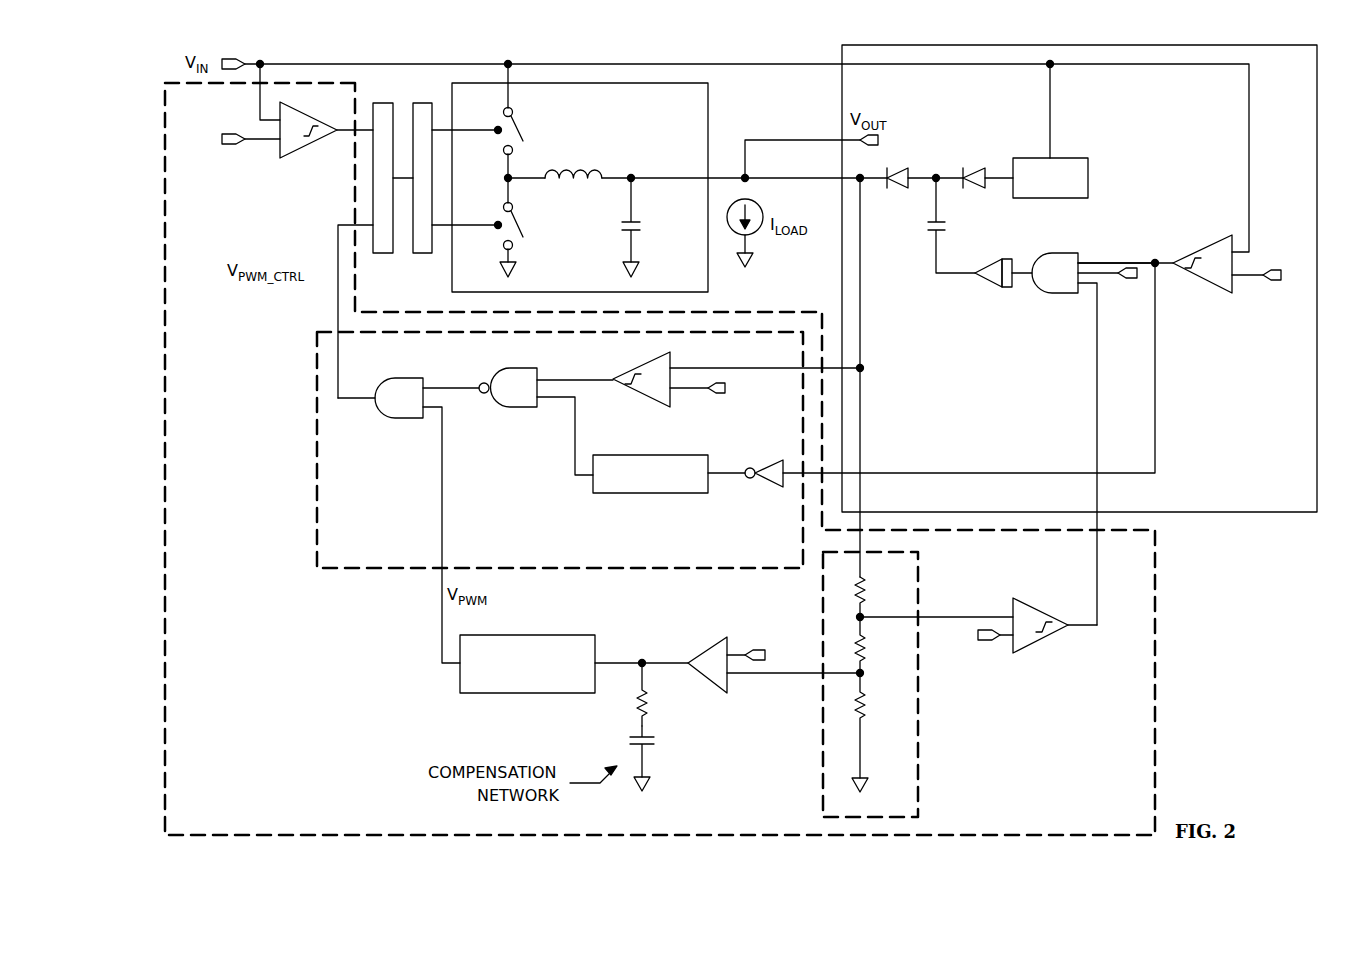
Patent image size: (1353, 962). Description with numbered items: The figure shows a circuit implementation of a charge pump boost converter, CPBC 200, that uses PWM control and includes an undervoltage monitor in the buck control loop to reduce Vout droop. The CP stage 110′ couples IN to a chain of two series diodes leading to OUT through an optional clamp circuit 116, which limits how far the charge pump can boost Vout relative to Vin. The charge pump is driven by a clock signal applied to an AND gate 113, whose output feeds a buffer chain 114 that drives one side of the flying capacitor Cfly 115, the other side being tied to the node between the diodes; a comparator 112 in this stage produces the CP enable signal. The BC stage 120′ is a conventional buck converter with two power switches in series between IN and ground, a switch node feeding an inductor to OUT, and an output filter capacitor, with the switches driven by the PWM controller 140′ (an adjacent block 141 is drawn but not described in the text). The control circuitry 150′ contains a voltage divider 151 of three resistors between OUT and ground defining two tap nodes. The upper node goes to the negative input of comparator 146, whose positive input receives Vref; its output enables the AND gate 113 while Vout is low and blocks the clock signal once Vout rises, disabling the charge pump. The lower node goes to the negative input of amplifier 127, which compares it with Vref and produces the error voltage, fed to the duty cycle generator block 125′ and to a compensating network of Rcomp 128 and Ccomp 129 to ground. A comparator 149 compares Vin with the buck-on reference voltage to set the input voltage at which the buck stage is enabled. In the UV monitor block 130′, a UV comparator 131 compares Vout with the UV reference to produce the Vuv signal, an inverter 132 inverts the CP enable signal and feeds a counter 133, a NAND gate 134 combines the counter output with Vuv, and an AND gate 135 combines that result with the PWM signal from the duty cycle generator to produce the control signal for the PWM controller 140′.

The charge pump boost converter (CPBC) 200 is at (1274, 700).
The CP stage 110′ is at (1050, 335).
The comparator 112 is at (1195, 246).
The AND gate 113 is at (1061, 253).
The buffer chain 114 is at (988, 289).
The flying capacitor (Cfly) 115 is at (930, 226).
The clamp circuit 116 is at (1088, 172).
The BC stage 120′ is at (708, 120).
The duty cycle generator block 125′ is at (460, 681).
The amplifier 127 is at (728, 683).
The compensation resistor (Rcomp) 128 is at (632, 708).
The compensation capacitor (Ccomp) 129 is at (626, 746).
The UV monitor block 130′ is at (536, 497).
The UV comparator 131 is at (641, 396).
The inverter 132 is at (768, 489).
The UV counter 133 is at (652, 495).
The NAND gate 134 is at (522, 410).
The AND gate 135 is at (405, 420).
The PWM controller 140′ is at (383, 255).
The switch driver 141 is at (423, 255).
The comparator 146 is at (1040, 648).
The comparator 149 is at (306, 160).
The control circuitry 150′ is at (1158, 683).
The voltage divider 151 is at (918, 740).